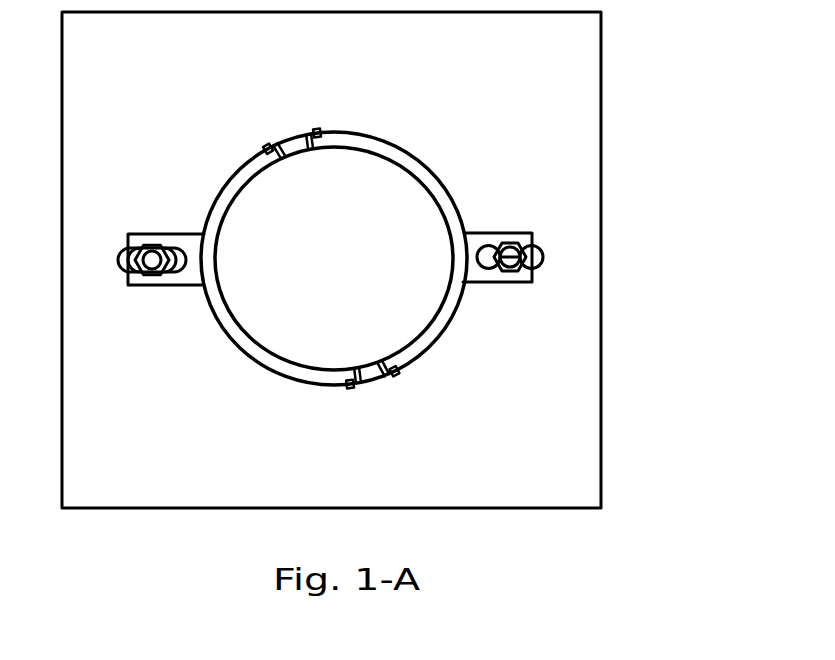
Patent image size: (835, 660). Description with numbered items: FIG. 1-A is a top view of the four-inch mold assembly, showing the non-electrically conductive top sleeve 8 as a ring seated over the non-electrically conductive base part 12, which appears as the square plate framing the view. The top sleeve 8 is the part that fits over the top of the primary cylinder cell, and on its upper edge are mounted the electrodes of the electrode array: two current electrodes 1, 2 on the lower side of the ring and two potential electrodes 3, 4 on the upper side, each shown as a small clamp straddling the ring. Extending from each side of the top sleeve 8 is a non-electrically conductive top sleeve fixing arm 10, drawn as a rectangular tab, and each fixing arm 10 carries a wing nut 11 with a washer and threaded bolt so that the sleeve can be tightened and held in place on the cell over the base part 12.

The current electrode 1 is at (395, 372).
The current electrode 2 is at (350, 383).
The potential electrode 3 is at (318, 133).
The potential electrode 4 is at (270, 147).
The non-electrically conductive top sleeve 8 is at (423, 173).
The non-electrically conductive top sleeve fixing arm 10 is at (532, 236).
The wing nut 11 is at (541, 261).
The non-electrically conductive base part 12 is at (543, 452).